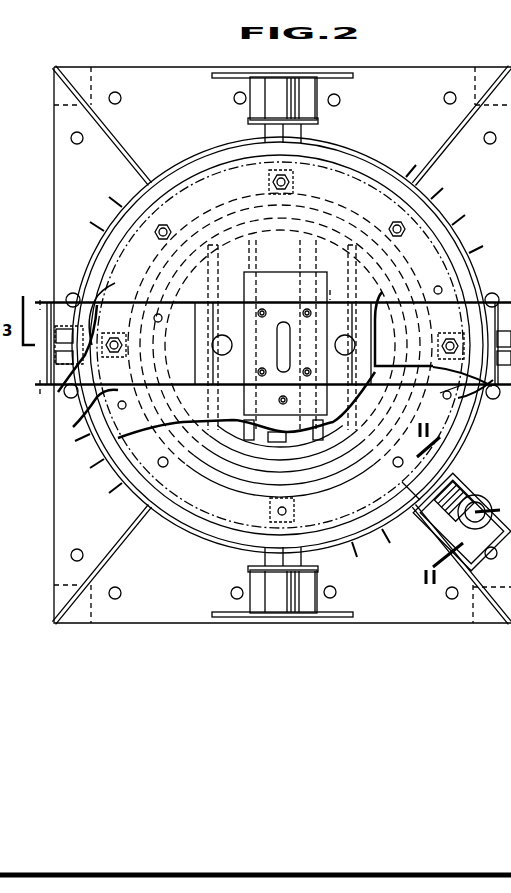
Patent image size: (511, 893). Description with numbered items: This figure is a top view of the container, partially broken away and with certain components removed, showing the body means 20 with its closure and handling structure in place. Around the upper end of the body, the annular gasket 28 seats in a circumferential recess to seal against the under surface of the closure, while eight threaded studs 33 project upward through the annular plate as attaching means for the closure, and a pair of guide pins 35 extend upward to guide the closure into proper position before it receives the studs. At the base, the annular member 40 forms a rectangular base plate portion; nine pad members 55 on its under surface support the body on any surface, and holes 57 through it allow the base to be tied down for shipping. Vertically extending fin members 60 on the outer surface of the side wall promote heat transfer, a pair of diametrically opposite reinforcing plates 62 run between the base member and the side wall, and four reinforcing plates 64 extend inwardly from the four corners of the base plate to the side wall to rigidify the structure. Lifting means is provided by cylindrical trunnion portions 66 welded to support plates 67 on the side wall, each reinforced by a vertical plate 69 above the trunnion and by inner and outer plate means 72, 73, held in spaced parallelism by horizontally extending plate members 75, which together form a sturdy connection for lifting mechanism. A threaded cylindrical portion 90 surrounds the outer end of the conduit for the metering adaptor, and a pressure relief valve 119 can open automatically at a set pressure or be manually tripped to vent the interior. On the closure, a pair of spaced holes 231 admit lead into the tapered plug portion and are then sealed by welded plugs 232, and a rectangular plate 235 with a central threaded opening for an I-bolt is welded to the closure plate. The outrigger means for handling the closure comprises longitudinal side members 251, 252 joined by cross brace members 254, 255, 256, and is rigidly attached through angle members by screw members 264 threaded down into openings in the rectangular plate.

The body means 20 is at (75, 487).
The annular gasket 28 is at (242, 509).
The threaded studs 33 is at (291, 184).
The guide pins 35 is at (438, 288).
The annular member 40 is at (156, 620).
The pad members 55 is at (97, 72).
The holes 57 is at (115, 92).
The fin members 60 is at (102, 224).
The reinforcing plates 62 is at (58, 389).
The reinforcing plates 64 is at (108, 146).
The trunnion portions 66 is at (310, 90).
The support portions or plates 67 is at (250, 165).
The vertically extending plate 69 is at (286, 134).
The inner plate means 72 is at (247, 123).
The outer plate means 73 is at (218, 72).
The horizontally extending plate members 75 is at (318, 606).
The cylindrical portion 90 is at (449, 396).
The pressure relief valve 119 is at (452, 516).
The holes 231 is at (224, 338).
The plugs 232 is at (222, 355).
The rectangular plate 235 is at (245, 285).
The side member 251 is at (87, 377).
The side member 252 is at (115, 307).
The cross brace member 254 is at (404, 320).
The cross brace member 255 is at (183, 381).
The cross brace member 256 is at (55, 341).
The screw members 264 is at (304, 311).